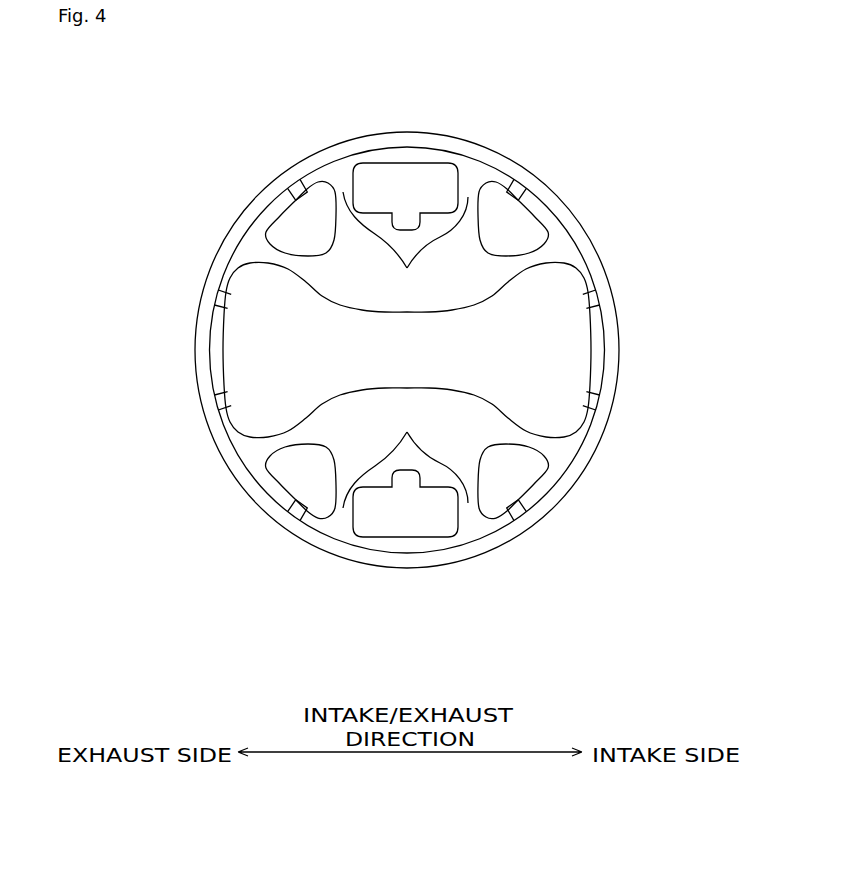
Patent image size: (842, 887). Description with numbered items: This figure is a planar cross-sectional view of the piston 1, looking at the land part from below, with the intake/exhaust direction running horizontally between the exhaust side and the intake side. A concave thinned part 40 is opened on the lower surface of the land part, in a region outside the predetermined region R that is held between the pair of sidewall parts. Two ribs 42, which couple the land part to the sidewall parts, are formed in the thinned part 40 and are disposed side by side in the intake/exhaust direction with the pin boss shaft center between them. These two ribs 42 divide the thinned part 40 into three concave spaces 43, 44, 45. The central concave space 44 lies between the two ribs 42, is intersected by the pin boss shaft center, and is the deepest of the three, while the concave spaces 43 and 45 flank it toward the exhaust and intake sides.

The piston 1 is at (235, 159).
The concave thinned part 40 is at (406, 351).
The rib 42 is at (405, 350).
The concave space 43 is at (313, 213).
The central concave space 44 is at (405, 182).
The concave space 45 is at (513, 351).